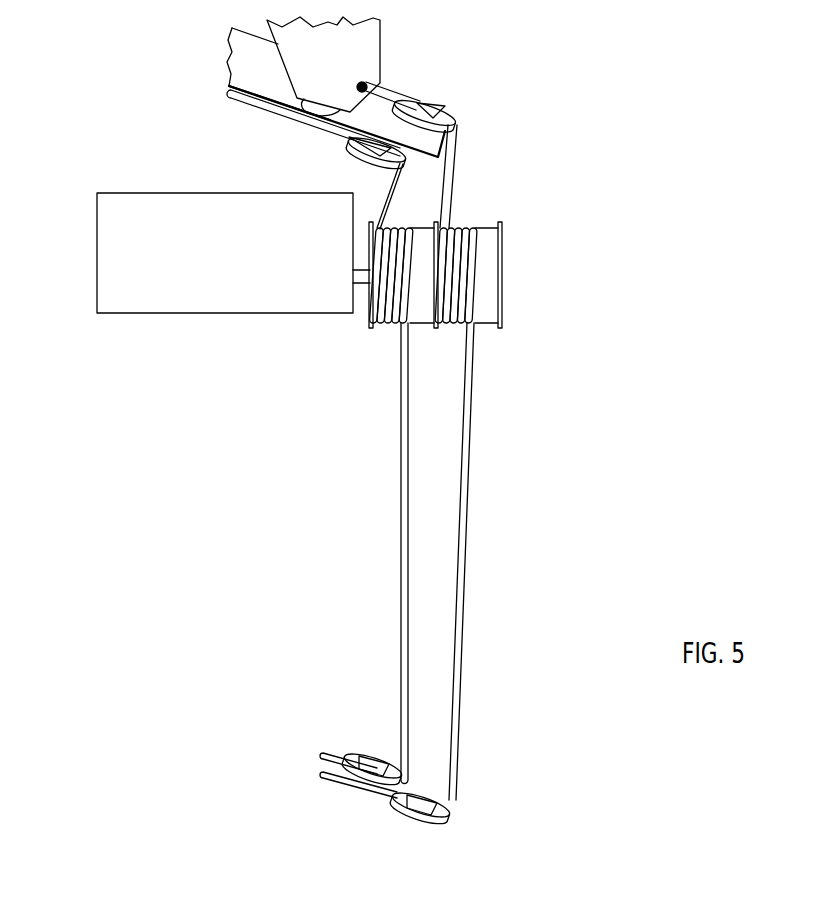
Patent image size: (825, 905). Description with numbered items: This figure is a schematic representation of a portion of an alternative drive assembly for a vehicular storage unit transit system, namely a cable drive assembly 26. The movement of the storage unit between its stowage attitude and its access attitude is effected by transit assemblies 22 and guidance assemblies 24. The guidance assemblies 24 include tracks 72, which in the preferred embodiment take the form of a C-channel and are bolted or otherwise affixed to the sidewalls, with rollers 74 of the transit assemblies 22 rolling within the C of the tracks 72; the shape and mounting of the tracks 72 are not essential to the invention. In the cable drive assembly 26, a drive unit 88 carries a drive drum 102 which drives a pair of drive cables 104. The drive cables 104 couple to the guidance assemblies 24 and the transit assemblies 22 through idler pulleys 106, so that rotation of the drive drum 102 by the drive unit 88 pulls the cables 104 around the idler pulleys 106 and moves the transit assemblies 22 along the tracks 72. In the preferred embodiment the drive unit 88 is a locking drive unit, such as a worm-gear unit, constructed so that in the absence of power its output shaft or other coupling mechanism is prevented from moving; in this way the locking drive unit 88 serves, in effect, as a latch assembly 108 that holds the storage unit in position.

The transit assembly 22 is at (357, 60).
The guidance assembly 24 is at (234, 40).
The cable drive assembly 26 is at (169, 790).
The track 72 is at (237, 74).
The roller 74 is at (323, 108).
The drive unit 88 is at (252, 295).
The drive drum 102 is at (488, 290).
The drive cable 104 is at (462, 583).
The idler pulley 106 is at (358, 142).
The latch assembly 108 is at (447, 113).